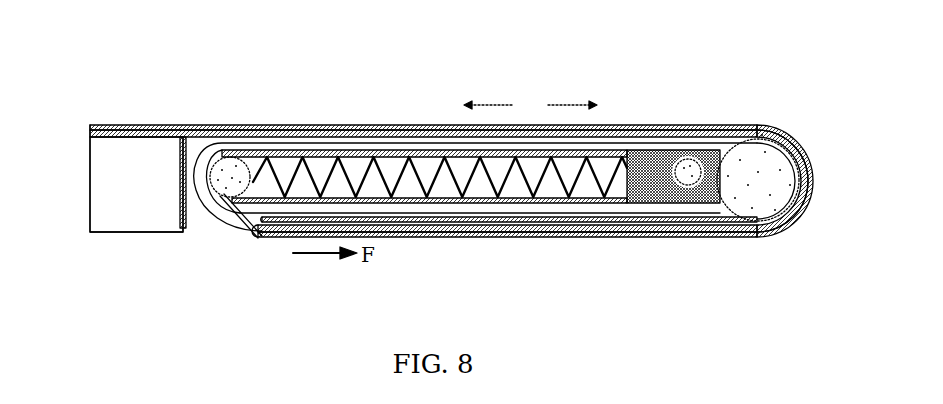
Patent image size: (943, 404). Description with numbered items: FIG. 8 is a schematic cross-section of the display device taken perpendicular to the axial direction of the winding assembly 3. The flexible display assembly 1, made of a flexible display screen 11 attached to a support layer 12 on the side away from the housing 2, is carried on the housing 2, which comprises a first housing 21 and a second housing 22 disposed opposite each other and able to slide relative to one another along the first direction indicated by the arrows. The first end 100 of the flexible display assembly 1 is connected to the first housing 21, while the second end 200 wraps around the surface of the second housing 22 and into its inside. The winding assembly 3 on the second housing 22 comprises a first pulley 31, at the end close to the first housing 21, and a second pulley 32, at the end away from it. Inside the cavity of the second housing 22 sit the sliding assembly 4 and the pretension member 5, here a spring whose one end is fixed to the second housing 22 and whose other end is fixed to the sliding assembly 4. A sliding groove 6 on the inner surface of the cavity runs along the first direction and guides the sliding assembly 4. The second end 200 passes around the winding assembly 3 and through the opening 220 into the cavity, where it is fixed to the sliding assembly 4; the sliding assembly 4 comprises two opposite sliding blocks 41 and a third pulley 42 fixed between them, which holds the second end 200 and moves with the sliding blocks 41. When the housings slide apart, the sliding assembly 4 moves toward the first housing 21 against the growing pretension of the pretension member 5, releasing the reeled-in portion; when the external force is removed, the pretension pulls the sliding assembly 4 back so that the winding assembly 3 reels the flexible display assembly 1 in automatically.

The first end 100 is at (99, 123).
The flexible display assembly 1 is at (451, 138).
The flexible display screen 11 is at (142, 125).
The support layer 12 is at (138, 74).
The housing 2 is at (407, 176).
The first housing 21 is at (100, 196).
The second housing 22 is at (187, 208).
The opening 220 is at (253, 243).
The winding assembly 3 is at (527, 140).
The first pulley 31 is at (233, 126).
The second pulley 32 is at (790, 178).
The sliding assembly 4 is at (679, 230).
The sliding block 41 is at (657, 206).
The third pulley 42 is at (680, 206).
The pretension member 5 is at (508, 193).
The sliding groove 6 is at (430, 200).
The second end 200 is at (693, 190).